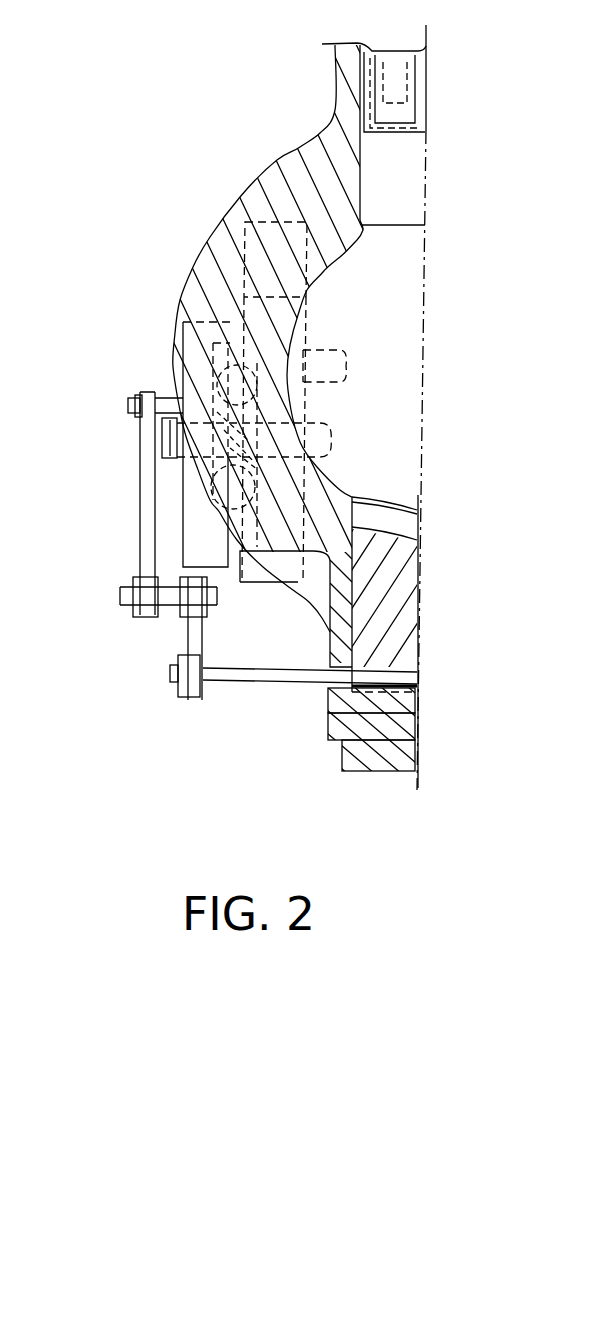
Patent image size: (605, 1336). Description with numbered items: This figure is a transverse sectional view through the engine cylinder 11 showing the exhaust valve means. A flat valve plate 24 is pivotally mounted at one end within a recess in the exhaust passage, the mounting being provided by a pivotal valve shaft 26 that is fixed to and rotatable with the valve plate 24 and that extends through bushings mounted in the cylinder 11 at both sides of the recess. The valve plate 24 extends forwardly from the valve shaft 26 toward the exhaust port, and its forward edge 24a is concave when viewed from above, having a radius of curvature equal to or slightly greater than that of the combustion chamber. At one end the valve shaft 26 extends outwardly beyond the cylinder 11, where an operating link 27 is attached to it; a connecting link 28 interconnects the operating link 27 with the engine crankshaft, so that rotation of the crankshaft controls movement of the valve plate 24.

The cylinder 11 is at (298, 172).
The valve plate 24 is at (398, 617).
The forward edge 24a is at (397, 502).
The valve shaft 26 is at (290, 674).
The operating link 27 is at (188, 637).
The connecting link 28 is at (150, 525).